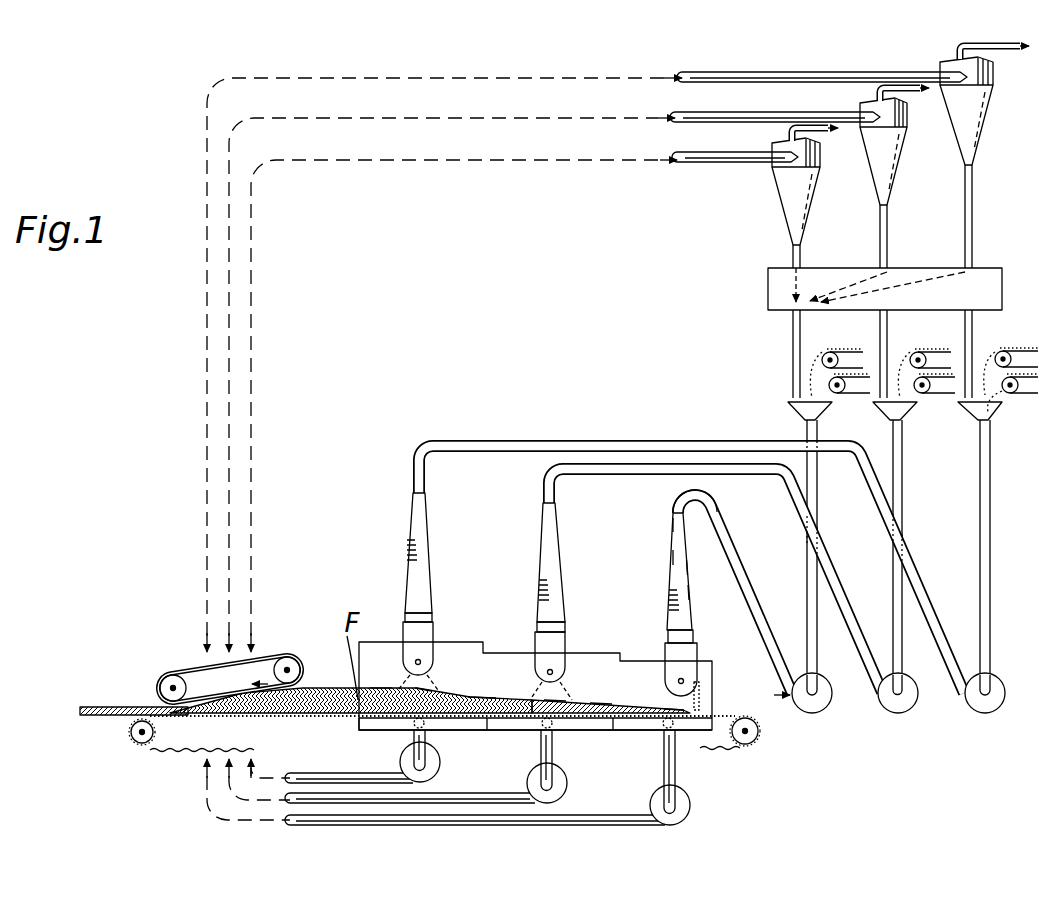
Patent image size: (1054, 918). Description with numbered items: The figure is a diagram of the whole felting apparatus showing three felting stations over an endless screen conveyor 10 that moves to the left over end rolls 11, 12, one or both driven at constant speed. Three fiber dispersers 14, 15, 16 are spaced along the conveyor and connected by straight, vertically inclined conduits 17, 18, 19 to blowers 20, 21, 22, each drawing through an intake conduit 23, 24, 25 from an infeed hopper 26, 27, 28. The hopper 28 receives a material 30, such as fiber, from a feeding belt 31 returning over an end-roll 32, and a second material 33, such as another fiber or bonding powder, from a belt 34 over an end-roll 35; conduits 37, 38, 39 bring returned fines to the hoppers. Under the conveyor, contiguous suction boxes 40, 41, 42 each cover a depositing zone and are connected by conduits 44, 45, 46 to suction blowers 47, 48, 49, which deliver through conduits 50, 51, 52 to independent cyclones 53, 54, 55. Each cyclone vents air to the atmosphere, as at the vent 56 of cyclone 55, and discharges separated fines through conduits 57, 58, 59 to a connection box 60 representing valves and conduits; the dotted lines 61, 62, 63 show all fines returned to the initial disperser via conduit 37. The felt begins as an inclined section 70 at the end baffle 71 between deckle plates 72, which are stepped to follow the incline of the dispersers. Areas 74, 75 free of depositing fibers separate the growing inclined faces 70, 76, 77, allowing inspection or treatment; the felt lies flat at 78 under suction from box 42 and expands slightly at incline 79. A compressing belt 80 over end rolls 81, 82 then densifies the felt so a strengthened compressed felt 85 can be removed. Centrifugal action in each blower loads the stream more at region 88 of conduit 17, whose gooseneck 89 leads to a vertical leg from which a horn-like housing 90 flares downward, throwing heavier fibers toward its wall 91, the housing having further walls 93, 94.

The endless screen conveyor 10 is at (196, 731).
The end roll 11 is at (756, 741).
The end roll 12 is at (140, 745).
The fiber disperser 14 is at (699, 672).
The fiber disperser 15 is at (567, 657).
The fiber disperser 16 is at (438, 650).
The conduit 17 is at (745, 572).
The conduit 18 is at (829, 568).
The conduit 19 is at (912, 567).
The blower 20 is at (814, 714).
The blower 21 is at (896, 714).
The blower 22 is at (980, 714).
The intake conduit 23 is at (818, 490).
The intake conduit 24 is at (903, 471).
The intake conduit 25 is at (991, 472).
The infeed hopper 26 is at (822, 411).
The infeed hopper 27 is at (905, 412).
The infeed hopper 28 is at (1003, 404).
The material 30 is at (1024, 350).
The feeding belt 31 is at (1013, 360).
The end roll 32 is at (1000, 350).
The second material 33 is at (996, 391).
The belt 34 is at (1037, 396).
The end roll 35 is at (1019, 385).
The conduit 37 is at (792, 331).
The conduit 38 is at (879, 322).
The conduit 39 is at (964, 322).
The suction box 40 is at (640, 731).
The suction box 41 is at (517, 731).
The suction box 42 is at (381, 731).
The conduit 44 is at (676, 771).
The conduit 45 is at (553, 750).
The conduit 46 is at (428, 742).
The suction blower 47 is at (691, 805).
The suction blower 48 is at (567, 782).
The suction blower 49 is at (441, 762).
The conduit 50 is at (731, 72).
The conduit 51 is at (726, 113).
The conduit 52 is at (718, 153).
The cyclone 53 is at (976, 141).
The cyclone 54 is at (900, 178).
The cyclone 55 is at (812, 200).
The vent 56 is at (788, 131).
The conduit 57 is at (973, 228).
The conduit 58 is at (888, 236).
The conduit 59 is at (801, 251).
The connection box 60 is at (767, 291).
The dotted line connection 61 is at (800, 285).
The dotted line connection 62 is at (849, 272).
The dotted line connection 63 is at (930, 272).
The inclined section 70 is at (674, 701).
The end baffle 71 is at (702, 694).
The deckle plate 72 is at (626, 660).
The area free from depositing fibers 74 is at (602, 701).
The area free from depositing fibers 75 is at (484, 700).
The inclined felt face 76 is at (557, 702).
The inclined felt face 77 is at (424, 689).
The flat portion 78 is at (380, 689).
The incline 79 is at (319, 688).
The belt 80 is at (230, 685).
The end roll 81 is at (288, 657).
The end roll 82 is at (172, 675).
The compressed felt 85 is at (100, 706).
The region 88 is at (769, 696).
The gooseneck 89 is at (675, 495).
The horn-like housing 90 is at (672, 530).
The wall 91 is at (672, 558).
The wall 93 is at (689, 566).
The wall 94 is at (689, 589).